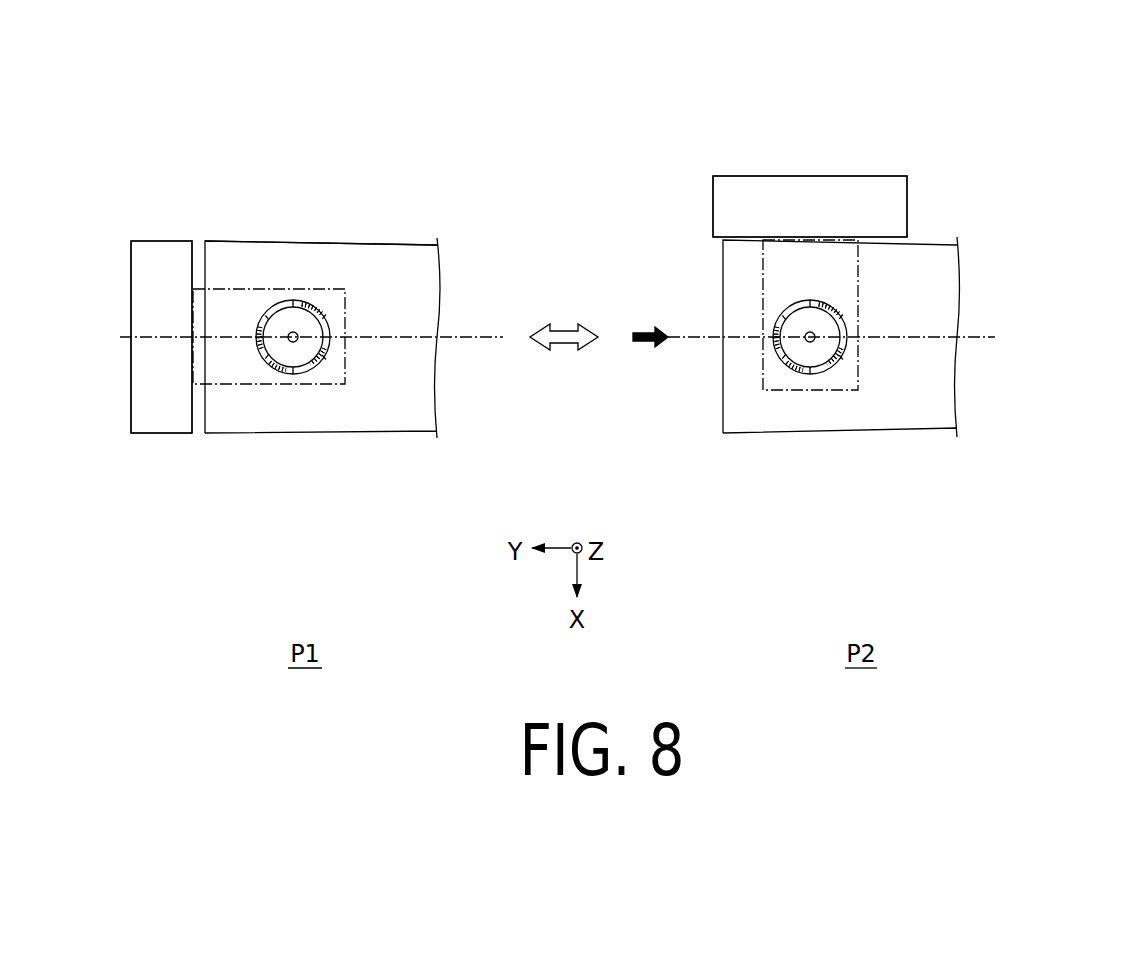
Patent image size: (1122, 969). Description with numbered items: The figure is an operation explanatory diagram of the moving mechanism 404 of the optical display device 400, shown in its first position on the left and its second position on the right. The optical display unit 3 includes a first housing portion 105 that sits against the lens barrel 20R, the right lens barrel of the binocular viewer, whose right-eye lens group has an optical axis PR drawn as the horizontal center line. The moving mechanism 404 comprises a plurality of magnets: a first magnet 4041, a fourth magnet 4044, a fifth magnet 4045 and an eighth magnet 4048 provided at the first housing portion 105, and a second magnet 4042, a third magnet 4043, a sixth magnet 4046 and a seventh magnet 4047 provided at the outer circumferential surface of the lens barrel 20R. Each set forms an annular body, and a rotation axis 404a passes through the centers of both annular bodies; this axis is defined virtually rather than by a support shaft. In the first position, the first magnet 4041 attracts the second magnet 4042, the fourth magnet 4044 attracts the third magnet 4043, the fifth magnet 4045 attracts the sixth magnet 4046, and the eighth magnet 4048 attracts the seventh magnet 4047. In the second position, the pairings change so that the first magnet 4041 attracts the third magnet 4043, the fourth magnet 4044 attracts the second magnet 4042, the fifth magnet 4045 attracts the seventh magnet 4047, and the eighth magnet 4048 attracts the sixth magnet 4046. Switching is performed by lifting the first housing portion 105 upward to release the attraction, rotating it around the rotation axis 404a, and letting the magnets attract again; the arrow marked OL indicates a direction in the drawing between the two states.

The optical display unit 3 is at (148, 228).
The first housing portion 105 is at (160, 428).
The optical display device 400 is at (432, 141).
The lens barrel 20R is at (414, 306).
The moving mechanism 404 is at (327, 300).
The rotation axis 404a is at (302, 300).
The first magnet 4041 is at (326, 320).
The second magnet 4042 is at (582, 387).
The third magnet 4043 is at (594, 345).
The fourth magnet 4044 is at (288, 331).
The fifth magnet 4045 is at (252, 320).
The sixth magnet 4046 is at (617, 341).
The seventh magnet 4047 is at (536, 340).
The eighth magnet 4048 is at (310, 303).
The optical axis PR is at (462, 337).
The optical axis direction OL is at (637, 347).